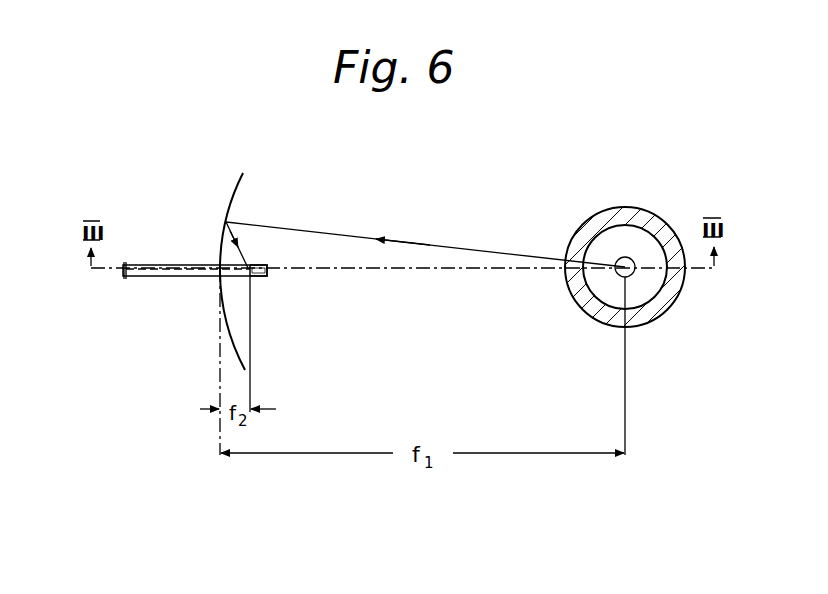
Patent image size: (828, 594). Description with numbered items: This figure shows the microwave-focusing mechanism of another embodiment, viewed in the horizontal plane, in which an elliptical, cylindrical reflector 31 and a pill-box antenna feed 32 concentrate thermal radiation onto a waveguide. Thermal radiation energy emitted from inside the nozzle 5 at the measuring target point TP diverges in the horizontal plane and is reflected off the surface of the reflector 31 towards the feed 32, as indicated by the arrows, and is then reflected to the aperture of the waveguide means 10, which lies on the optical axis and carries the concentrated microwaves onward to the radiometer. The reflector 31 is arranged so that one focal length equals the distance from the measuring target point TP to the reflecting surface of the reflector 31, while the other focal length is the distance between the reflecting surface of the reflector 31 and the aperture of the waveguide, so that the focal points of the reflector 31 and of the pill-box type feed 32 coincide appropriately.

The nozzle 5 is at (653, 217).
The waveguide means 10 is at (184, 265).
The reflector 31 is at (233, 192).
The feed 32 is at (260, 274).
The measuring target point TP is at (632, 276).